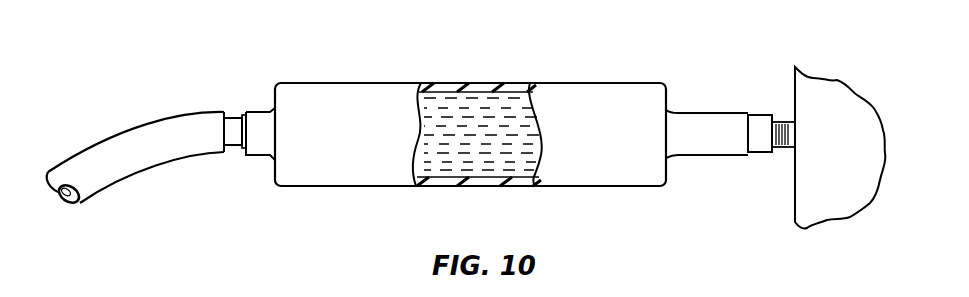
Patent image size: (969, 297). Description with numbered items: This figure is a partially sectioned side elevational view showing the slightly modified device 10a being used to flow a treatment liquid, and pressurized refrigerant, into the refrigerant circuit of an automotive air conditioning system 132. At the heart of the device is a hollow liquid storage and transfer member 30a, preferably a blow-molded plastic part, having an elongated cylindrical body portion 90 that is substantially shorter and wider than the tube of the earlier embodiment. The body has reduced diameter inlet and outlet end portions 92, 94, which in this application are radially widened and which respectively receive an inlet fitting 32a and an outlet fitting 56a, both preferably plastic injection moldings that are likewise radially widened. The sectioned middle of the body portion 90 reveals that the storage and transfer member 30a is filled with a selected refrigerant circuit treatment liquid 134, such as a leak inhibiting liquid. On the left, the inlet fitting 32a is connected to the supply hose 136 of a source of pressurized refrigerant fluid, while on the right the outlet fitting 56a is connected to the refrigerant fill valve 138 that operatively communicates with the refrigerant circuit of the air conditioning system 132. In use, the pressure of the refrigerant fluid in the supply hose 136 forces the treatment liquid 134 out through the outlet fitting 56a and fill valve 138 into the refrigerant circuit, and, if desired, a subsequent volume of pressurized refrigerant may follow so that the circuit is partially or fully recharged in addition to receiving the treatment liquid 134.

The alternate embodiment of the device 10a is at (527, 52).
The hollow liquid storage and transfer member 30a is at (438, 131).
The inlet fitting 32a is at (233, 150).
The outlet fitting 56a is at (766, 106).
The elongated cylindrical body portion 90 is at (618, 83).
The inlet end portion 92 is at (255, 112).
The outlet end portion 94 is at (722, 157).
The automotive air conditioning system 132 is at (840, 80).
The refrigerant circuit treatment liquid 134 is at (498, 150).
The supply hose 136 is at (173, 111).
The refrigerant fill valve 138 is at (781, 148).